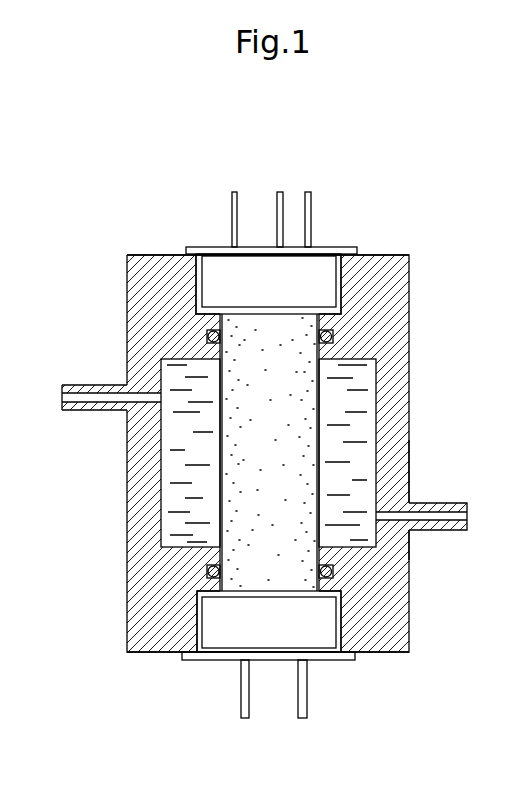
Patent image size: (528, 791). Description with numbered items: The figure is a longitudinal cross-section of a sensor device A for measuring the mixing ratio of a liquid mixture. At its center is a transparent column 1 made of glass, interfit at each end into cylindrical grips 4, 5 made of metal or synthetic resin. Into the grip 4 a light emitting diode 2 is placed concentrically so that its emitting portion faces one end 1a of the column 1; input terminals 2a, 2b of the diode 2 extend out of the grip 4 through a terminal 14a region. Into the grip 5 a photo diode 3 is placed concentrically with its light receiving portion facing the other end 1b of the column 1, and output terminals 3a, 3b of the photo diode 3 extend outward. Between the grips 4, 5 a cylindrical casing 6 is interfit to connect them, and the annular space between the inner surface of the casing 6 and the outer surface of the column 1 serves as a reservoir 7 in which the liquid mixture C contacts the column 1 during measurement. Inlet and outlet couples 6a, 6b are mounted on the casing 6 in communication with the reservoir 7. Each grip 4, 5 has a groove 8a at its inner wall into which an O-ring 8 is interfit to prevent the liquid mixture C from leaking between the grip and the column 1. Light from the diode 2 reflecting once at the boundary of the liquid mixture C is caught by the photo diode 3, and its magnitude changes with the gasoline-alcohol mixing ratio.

The electrolytic cell apparatus A is at (117, 242).
The transparent column 1 is at (298, 414).
The one end of the column 1a is at (272, 315).
The lower end block 1b is at (273, 590).
The light emitting diode 2 is at (317, 238).
The input terminal of the diode 2a is at (279, 192).
The input terminal of the diode 2b is at (311, 193).
The photo diode 3 is at (317, 628).
The output terminal of the photo diode 3a is at (242, 700).
The output terminal of the photo diode 3b is at (302, 700).
The cylindrical grip 4 is at (130, 277).
The cylindrical grip 5 is at (395, 615).
The cylindrical casing 6 is at (397, 462).
The inlet couple 6a is at (68, 385).
The outlet couple 6b is at (443, 505).
The reservoir 7 is at (178, 442).
The O-ring 8 is at (207, 572).
The groove 8a is at (207, 579).
The reference electrode lead 14a is at (232, 197).
The liquid mixture C is at (287, 464).